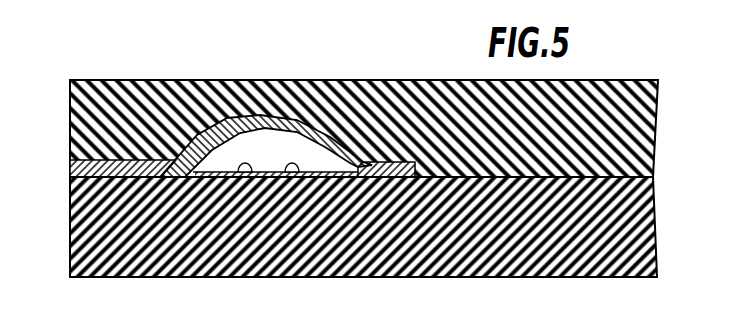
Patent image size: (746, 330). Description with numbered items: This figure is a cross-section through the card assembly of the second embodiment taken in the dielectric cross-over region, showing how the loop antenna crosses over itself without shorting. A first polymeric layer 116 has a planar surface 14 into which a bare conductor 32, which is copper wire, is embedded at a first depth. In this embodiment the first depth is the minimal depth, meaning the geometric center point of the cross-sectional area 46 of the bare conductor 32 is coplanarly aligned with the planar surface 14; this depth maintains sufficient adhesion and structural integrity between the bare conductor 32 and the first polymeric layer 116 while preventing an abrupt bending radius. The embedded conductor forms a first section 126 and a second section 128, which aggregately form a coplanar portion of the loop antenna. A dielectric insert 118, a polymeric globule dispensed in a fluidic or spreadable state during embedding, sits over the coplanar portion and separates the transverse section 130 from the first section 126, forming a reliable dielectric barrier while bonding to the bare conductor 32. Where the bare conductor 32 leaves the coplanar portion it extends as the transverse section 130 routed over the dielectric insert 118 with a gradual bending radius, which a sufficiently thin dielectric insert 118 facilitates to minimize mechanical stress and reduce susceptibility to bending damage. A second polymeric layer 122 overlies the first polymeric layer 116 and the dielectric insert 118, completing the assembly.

The planar surface 14 is at (620, 178).
The bare conductor 32 is at (125, 168).
The cross-sectional area 46 is at (312, 177).
The first polymeric layer 116 is at (637, 243).
The dielectric insert 118 is at (268, 173).
The second polymeric layer 122 is at (637, 128).
The first section 126 is at (243, 172).
The second section 128 is at (387, 162).
The transverse section 130 is at (257, 116).